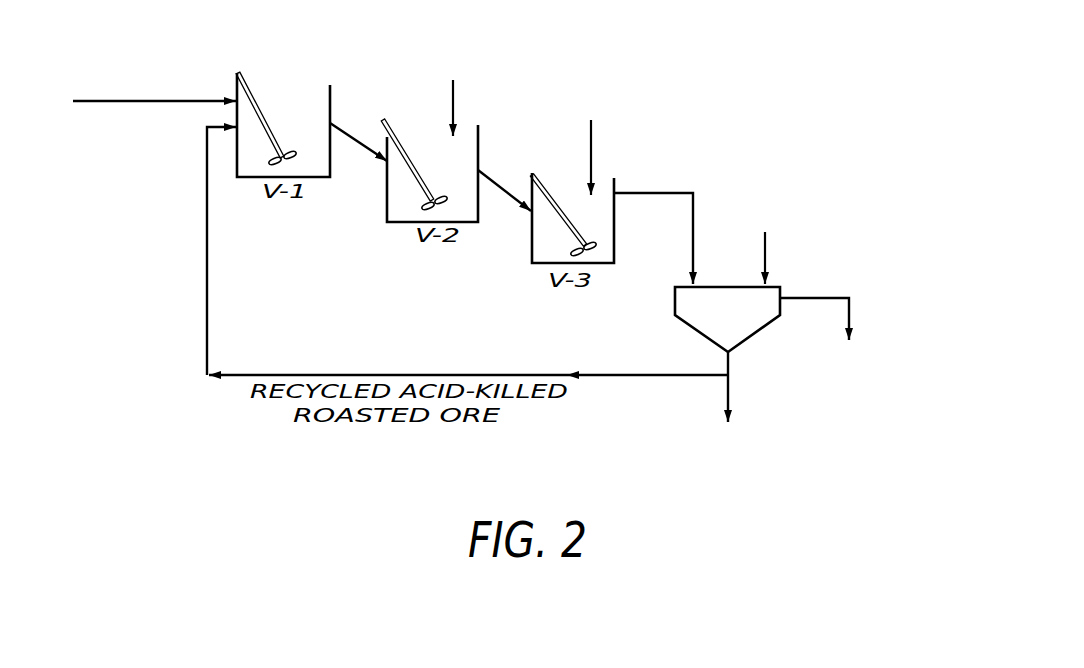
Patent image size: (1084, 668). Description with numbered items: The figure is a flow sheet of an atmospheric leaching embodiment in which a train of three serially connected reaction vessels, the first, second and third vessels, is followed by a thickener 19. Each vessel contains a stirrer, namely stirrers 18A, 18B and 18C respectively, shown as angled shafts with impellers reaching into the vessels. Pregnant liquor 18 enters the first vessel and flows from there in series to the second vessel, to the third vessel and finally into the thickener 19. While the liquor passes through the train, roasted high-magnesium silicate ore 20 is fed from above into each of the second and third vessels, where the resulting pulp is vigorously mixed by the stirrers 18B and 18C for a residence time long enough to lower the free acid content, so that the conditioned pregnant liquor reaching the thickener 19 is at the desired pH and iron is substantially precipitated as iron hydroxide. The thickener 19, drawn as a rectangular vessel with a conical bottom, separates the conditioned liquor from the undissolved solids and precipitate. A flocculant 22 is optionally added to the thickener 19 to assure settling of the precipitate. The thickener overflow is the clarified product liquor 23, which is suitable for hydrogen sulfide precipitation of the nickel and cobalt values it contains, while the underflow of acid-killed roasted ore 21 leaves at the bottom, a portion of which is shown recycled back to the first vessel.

The pregnant liquor 18 is at (154, 88).
The stirrer 18A is at (254, 97).
The stirrer 18B is at (421, 139).
The stirrer 18C is at (554, 200).
The roasted high-magnesium silicate ore 20 is at (554, 113).
The thickener 19 is at (700, 332).
The acid-killed roasted ore underflow 21 is at (707, 413).
The flocculant 22 is at (800, 245).
The clarified product liquor 23 is at (870, 360).